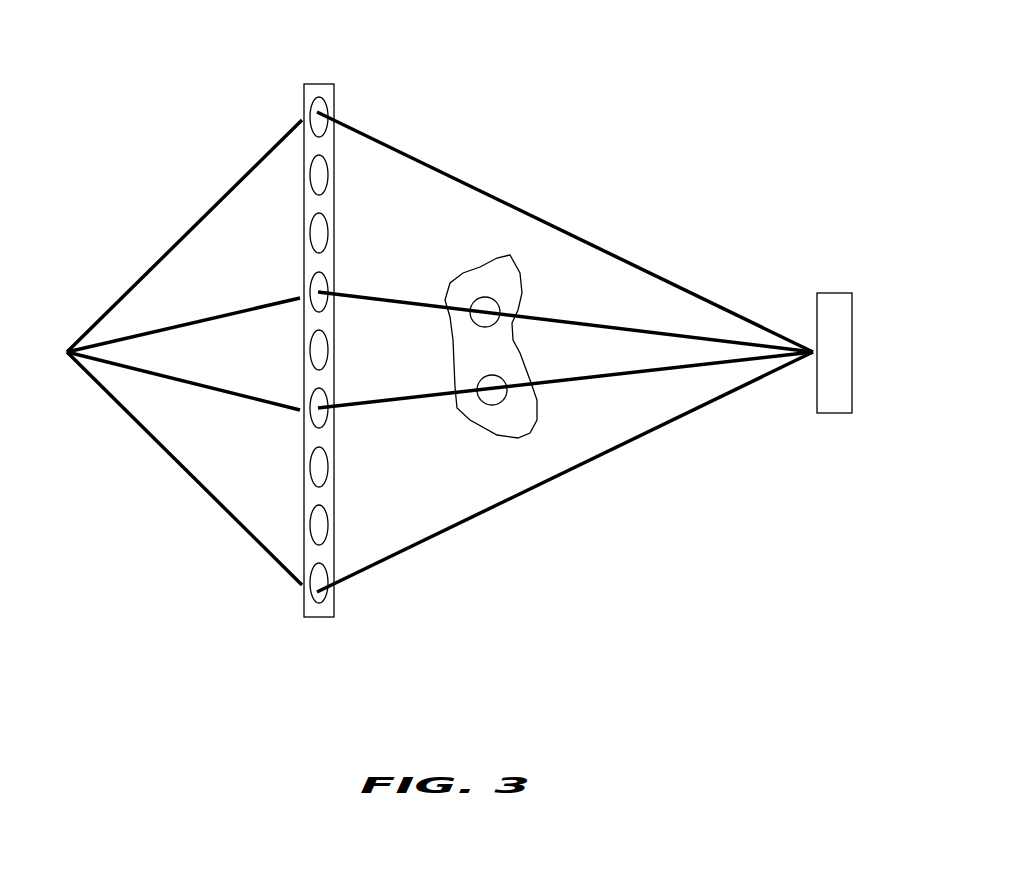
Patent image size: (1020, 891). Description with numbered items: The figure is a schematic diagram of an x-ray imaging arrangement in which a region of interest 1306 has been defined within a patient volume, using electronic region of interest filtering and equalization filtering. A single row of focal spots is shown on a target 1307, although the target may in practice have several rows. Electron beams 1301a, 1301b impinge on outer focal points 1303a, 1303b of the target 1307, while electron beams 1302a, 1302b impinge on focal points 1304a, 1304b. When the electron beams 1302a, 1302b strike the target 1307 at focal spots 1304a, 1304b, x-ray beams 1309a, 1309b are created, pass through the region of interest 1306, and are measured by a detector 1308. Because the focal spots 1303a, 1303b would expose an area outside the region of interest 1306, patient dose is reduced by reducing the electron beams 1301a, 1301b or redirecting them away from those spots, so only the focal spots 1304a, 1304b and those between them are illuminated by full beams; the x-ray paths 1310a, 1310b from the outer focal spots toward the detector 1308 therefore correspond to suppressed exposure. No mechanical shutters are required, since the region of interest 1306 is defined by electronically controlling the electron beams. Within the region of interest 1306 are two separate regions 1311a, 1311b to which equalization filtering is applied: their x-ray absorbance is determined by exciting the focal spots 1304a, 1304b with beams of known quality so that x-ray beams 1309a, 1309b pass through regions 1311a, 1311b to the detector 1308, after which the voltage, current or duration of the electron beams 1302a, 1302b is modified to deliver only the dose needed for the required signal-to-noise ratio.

The electron beam 1301a is at (92, 322).
The electron beam 1301b is at (87, 382).
The electron beam 1302a is at (162, 325).
The electron beam 1302b is at (165, 382).
The focal point 1303a is at (313, 113).
The focal point 1303b is at (307, 605).
The focal point 1304a is at (325, 277).
The focal point 1304b is at (330, 427).
The region of interest 1306 is at (510, 255).
The target 1307 is at (327, 83).
The detector 1308 is at (833, 293).
The x-ray beam 1309a is at (600, 325).
The x-ray beam 1309b is at (598, 382).
The first outer beam to detector 1310a is at (692, 288).
The second outer beam to detector 1310b is at (692, 413).
The region 1311a is at (480, 300).
The region 1311b is at (488, 407).